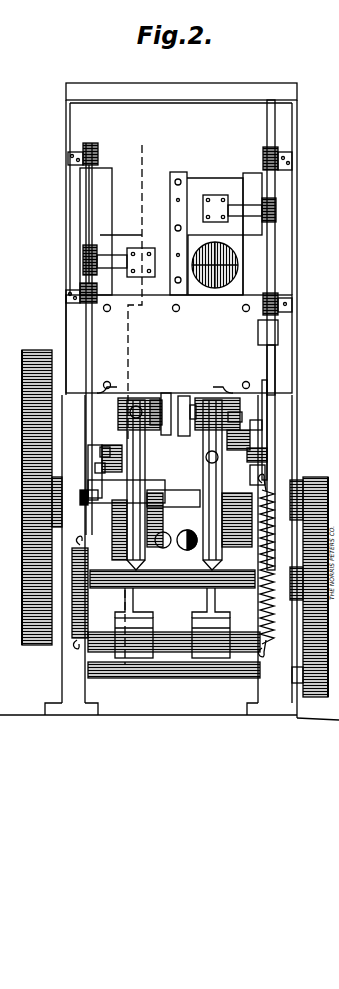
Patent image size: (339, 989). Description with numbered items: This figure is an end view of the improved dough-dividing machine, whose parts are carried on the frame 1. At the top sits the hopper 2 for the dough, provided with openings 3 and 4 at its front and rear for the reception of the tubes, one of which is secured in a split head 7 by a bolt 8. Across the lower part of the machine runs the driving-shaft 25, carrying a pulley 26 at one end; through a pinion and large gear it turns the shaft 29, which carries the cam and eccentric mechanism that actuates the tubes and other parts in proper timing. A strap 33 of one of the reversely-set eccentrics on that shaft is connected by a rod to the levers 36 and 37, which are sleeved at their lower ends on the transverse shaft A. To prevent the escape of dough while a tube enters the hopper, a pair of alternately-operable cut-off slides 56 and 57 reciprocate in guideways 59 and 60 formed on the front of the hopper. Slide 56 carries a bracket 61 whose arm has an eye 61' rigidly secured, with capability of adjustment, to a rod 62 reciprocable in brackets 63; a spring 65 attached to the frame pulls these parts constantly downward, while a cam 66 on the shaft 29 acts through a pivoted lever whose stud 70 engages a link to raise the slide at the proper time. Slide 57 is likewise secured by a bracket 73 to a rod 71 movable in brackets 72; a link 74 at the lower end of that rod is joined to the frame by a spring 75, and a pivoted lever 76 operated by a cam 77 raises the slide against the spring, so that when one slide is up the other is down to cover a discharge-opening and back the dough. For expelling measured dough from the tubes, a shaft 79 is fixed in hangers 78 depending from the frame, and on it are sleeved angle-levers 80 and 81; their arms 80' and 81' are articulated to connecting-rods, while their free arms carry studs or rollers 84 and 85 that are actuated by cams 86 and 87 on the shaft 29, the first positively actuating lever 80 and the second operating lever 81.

The frame 1 is at (169, 401).
The hopper 2 is at (179, 251).
The opening 3 is at (303, 262).
The opening 4 is at (85, 432).
The split head 7 is at (100, 452).
The bolt 8 is at (90, 495).
The driving-shaft 25 is at (200, 592).
The pulley 26 is at (310, 697).
The shaft 29 is at (270, 458).
The strap 33 is at (182, 525).
The lever 36 is at (135, 638).
The lever 37 is at (212, 638).
The cut-off slide 56 is at (122, 238).
The cut-off slide 57 is at (262, 182).
The guideway 59 is at (113, 190).
The guideway 60 is at (188, 176).
The bracket 61 is at (48, 253).
The eye 61' is at (91, 262).
The rod 62 is at (86, 197).
The brackets 63 is at (82, 150).
The spring 65 is at (72, 632).
The cam 66 is at (95, 468).
The stud 70 is at (75, 505).
The rod 71 is at (276, 118).
The brackets 72 is at (278, 153).
The bracket 73 is at (214, 205).
The link 74 is at (275, 345).
The spring 75 is at (260, 612).
The pivoted lever 76 is at (250, 445).
The cam 77 is at (270, 470).
The hangers 78 is at (135, 402).
The shaft 79 is at (182, 398).
The angle-lever 80 is at (169, 384).
The arm 80' is at (147, 485).
The angle-lever 81 is at (210, 371).
The arm 81' is at (201, 485).
The stud or roller 84 is at (130, 432).
The stud or roller 85 is at (258, 425).
The cam 86 is at (93, 592).
The cam 87 is at (272, 565).
The shaft A is at (175, 645).